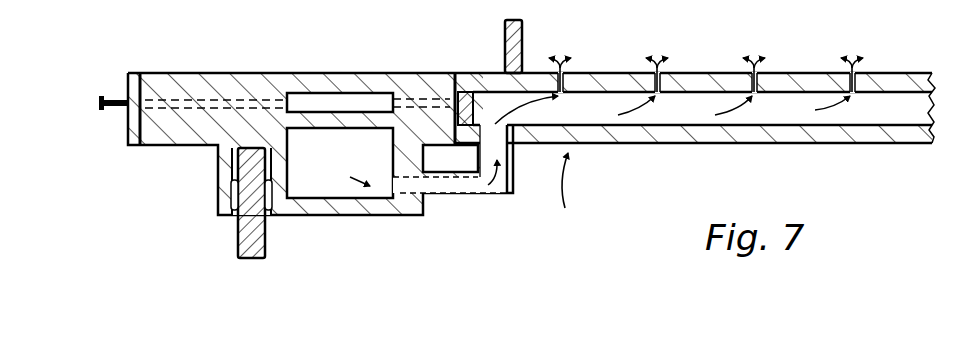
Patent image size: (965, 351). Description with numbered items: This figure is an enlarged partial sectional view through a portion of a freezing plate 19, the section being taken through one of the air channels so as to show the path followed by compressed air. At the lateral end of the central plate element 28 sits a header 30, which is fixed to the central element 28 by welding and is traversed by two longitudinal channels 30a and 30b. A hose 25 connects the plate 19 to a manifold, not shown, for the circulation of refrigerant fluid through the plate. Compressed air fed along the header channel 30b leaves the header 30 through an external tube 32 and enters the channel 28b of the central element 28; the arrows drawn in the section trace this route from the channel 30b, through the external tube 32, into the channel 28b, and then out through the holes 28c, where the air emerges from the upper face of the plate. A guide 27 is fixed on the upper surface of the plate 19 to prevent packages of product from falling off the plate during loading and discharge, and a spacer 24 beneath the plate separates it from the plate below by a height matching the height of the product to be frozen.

The plate 19 is at (582, 187).
The spacer 24 is at (237, 233).
The hose 25 is at (116, 100).
The guide 27 is at (505, 47).
The central plate element 28 is at (795, 73).
The channel 28b is at (663, 110).
The hole 28c is at (665, 70).
The header 30 is at (212, 87).
The longitudinal channel 30a is at (323, 102).
The longitudinal channel 30b is at (318, 180).
The external tube 32 is at (460, 185).